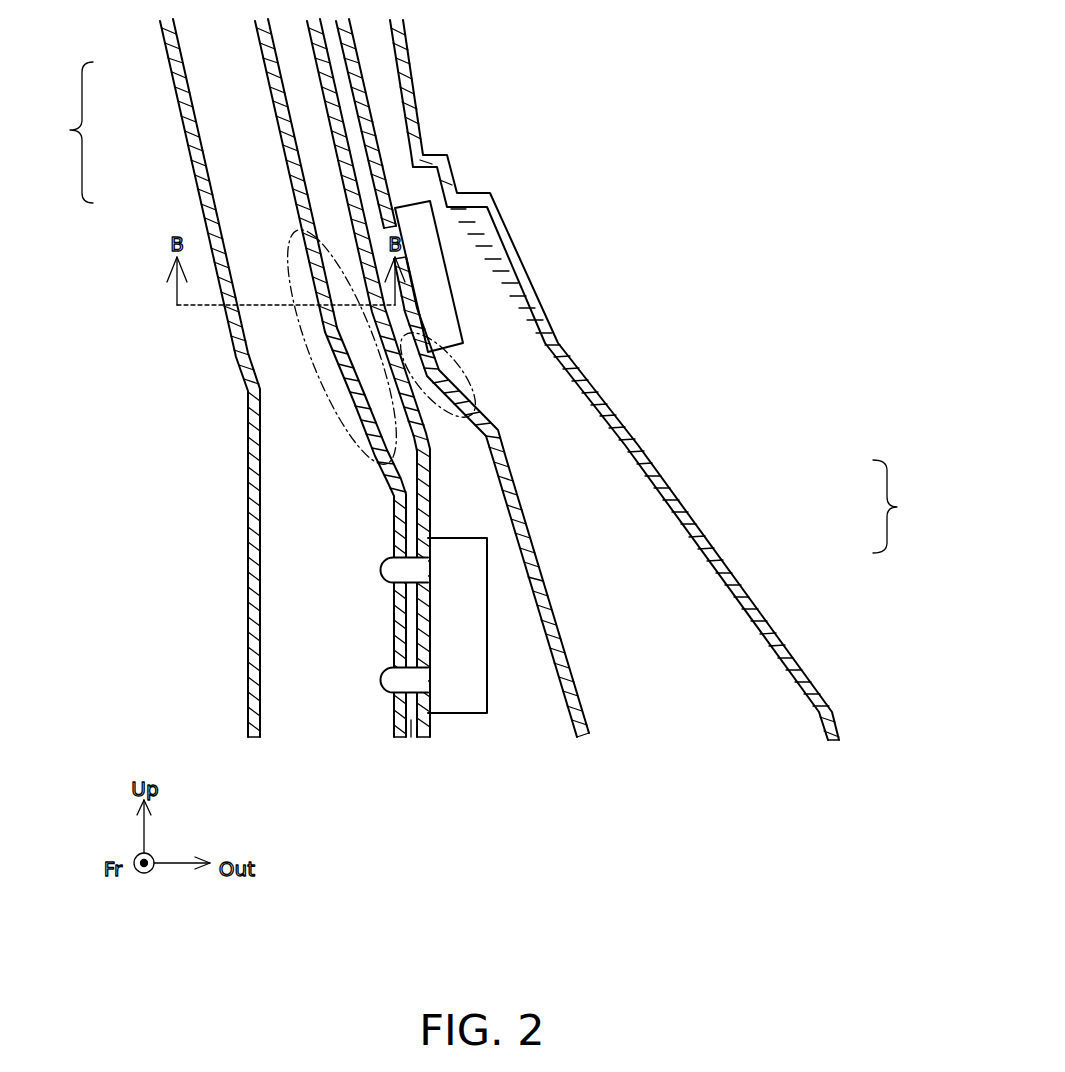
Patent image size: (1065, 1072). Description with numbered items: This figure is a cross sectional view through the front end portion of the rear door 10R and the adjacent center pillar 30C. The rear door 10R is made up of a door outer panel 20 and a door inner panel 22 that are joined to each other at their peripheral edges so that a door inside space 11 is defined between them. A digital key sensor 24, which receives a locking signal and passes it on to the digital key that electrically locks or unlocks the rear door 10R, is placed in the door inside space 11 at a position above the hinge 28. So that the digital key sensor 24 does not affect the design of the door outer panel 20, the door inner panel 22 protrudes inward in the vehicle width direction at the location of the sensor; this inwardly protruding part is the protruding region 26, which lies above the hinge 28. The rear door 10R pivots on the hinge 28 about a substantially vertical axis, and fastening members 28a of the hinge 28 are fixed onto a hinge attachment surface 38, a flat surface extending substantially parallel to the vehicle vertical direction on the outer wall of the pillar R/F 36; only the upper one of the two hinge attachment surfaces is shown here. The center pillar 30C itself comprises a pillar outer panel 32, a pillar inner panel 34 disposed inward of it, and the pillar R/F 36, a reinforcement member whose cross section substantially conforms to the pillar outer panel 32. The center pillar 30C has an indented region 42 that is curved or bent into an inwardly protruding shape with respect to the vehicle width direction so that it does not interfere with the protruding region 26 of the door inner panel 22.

The rear door 10R is at (908, 506).
The door inside space 11 is at (657, 628).
The door outer panel 20 is at (630, 380).
The door inner panel 22 is at (603, 378).
The digital key sensor 24 is at (484, 276).
The protruding region 26 is at (521, 371).
The hinge 28 is at (475, 679).
The fastening members 28a is at (376, 706).
The center pillar 30C is at (57, 132).
The pillar outer panel 32 is at (259, 378).
The pillar inner panel 34 is at (176, 378).
The pillar R/F 36 is at (249, 378).
The hinge attachment surface 38 is at (400, 783).
The indented region 42 is at (299, 346).